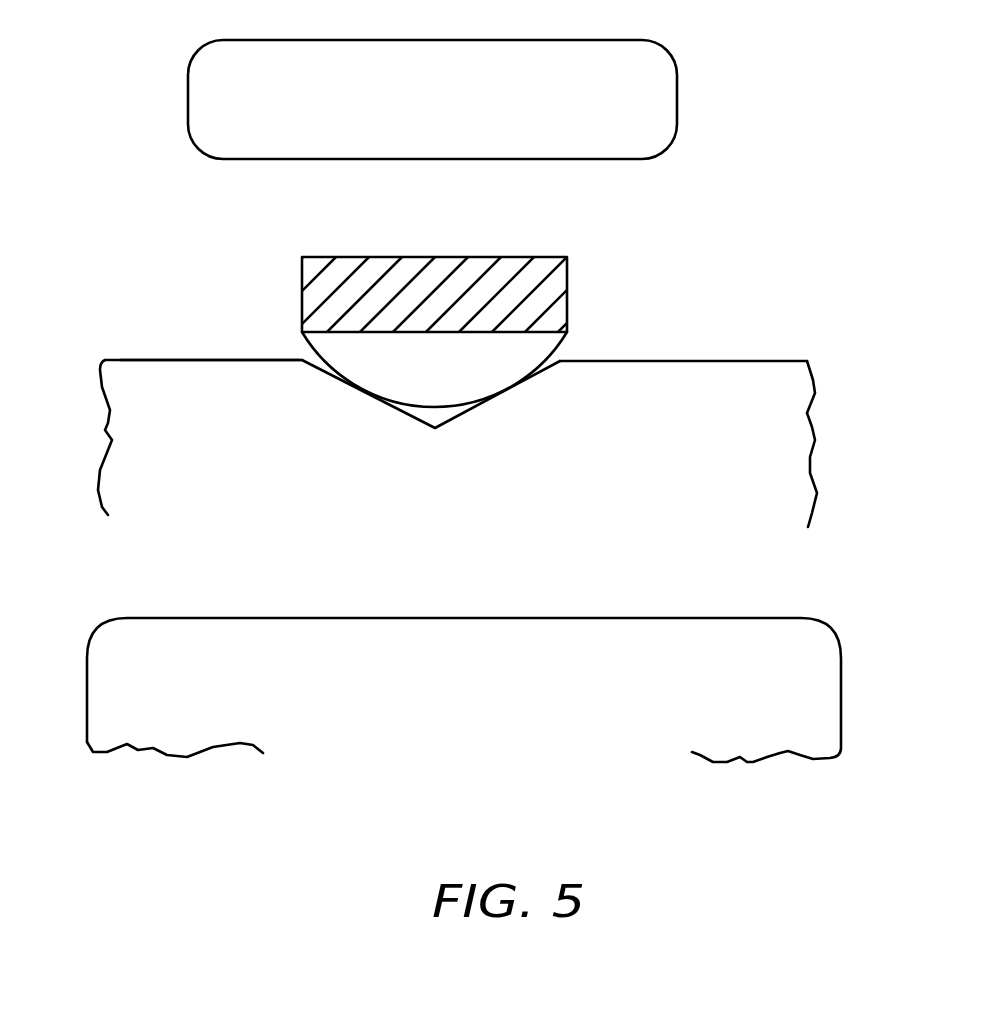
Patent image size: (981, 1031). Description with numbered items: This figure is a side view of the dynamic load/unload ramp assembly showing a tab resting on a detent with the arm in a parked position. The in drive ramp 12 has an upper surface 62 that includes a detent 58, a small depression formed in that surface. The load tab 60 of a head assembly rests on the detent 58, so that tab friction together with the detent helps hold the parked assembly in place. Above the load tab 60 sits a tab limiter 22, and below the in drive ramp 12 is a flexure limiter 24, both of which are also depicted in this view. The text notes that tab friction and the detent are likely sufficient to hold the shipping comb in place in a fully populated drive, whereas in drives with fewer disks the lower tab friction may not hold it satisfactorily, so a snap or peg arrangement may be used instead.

The in drive ramp 12 is at (130, 432).
The tab limiter 22 is at (667, 100).
The flexure limiter 24 is at (611, 618).
The detent 58 is at (357, 390).
The load tab 60 is at (546, 348).
The upper surface 62 is at (213, 360).